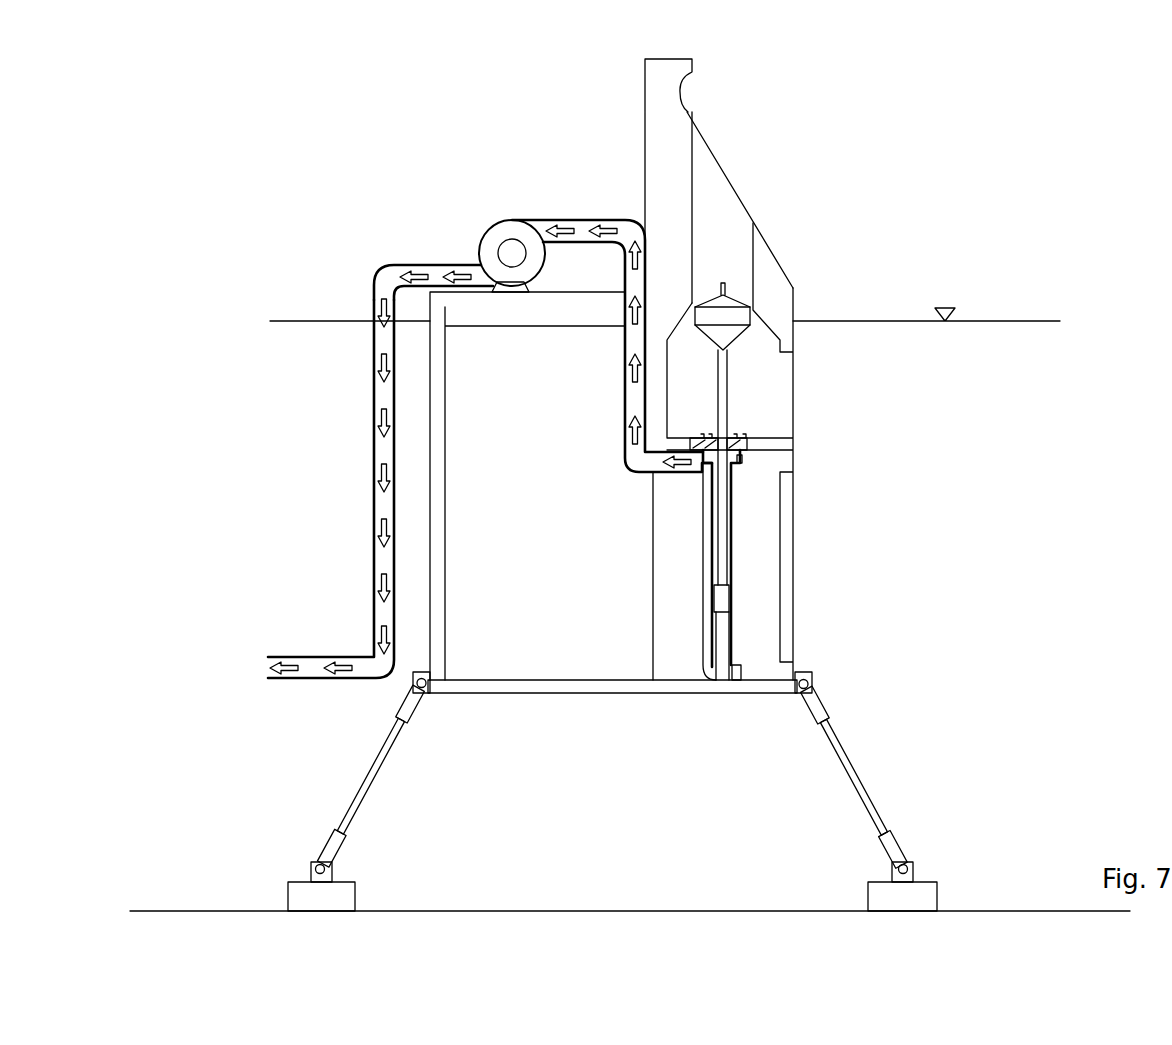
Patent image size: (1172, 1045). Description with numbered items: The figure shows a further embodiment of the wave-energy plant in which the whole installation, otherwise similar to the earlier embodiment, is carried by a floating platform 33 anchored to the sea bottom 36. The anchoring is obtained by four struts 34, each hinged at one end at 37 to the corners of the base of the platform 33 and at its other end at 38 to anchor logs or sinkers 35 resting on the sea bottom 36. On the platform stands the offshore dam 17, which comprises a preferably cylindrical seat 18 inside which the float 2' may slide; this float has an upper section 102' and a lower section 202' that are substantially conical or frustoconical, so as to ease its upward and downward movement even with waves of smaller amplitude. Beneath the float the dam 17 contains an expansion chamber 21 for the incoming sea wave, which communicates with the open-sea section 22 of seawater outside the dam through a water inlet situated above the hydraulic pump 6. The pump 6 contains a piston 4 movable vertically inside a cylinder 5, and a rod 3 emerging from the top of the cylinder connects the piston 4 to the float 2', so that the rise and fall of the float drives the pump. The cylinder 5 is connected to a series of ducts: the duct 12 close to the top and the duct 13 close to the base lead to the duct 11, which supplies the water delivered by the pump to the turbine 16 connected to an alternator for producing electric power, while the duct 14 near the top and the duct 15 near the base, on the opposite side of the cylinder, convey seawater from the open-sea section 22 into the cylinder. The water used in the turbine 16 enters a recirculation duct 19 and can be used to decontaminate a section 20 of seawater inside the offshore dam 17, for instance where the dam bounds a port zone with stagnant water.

The offshore dam 17 is at (660, 108).
The seat 18 is at (692, 178).
The turbine 16 is at (496, 233).
The duct 11 is at (582, 227).
The section of seawater 20 is at (313, 330).
The recirculation duct 19 is at (387, 447).
The open-sea section 22 is at (1020, 335).
The floating platform 33 is at (535, 640).
The expansion chamber 21 is at (783, 415).
The upper section 102' is at (791, 256).
The float 2' is at (791, 296).
The lower section 202' is at (807, 347).
The rod 3 is at (723, 400).
The duct 12 is at (712, 438).
The duct 14 is at (742, 459).
The duct 13 is at (707, 633).
The hydraulic pump 6 is at (745, 552).
The piston 4 is at (722, 600).
The cylinder 5 is at (723, 640).
The duct 15 is at (738, 680).
The hinge 37 is at (422, 693).
The struts 34 is at (367, 773).
The hinge 38 is at (320, 863).
The anchor logs or sinkers 35 is at (302, 892).
The sea bottom 36 is at (655, 910).